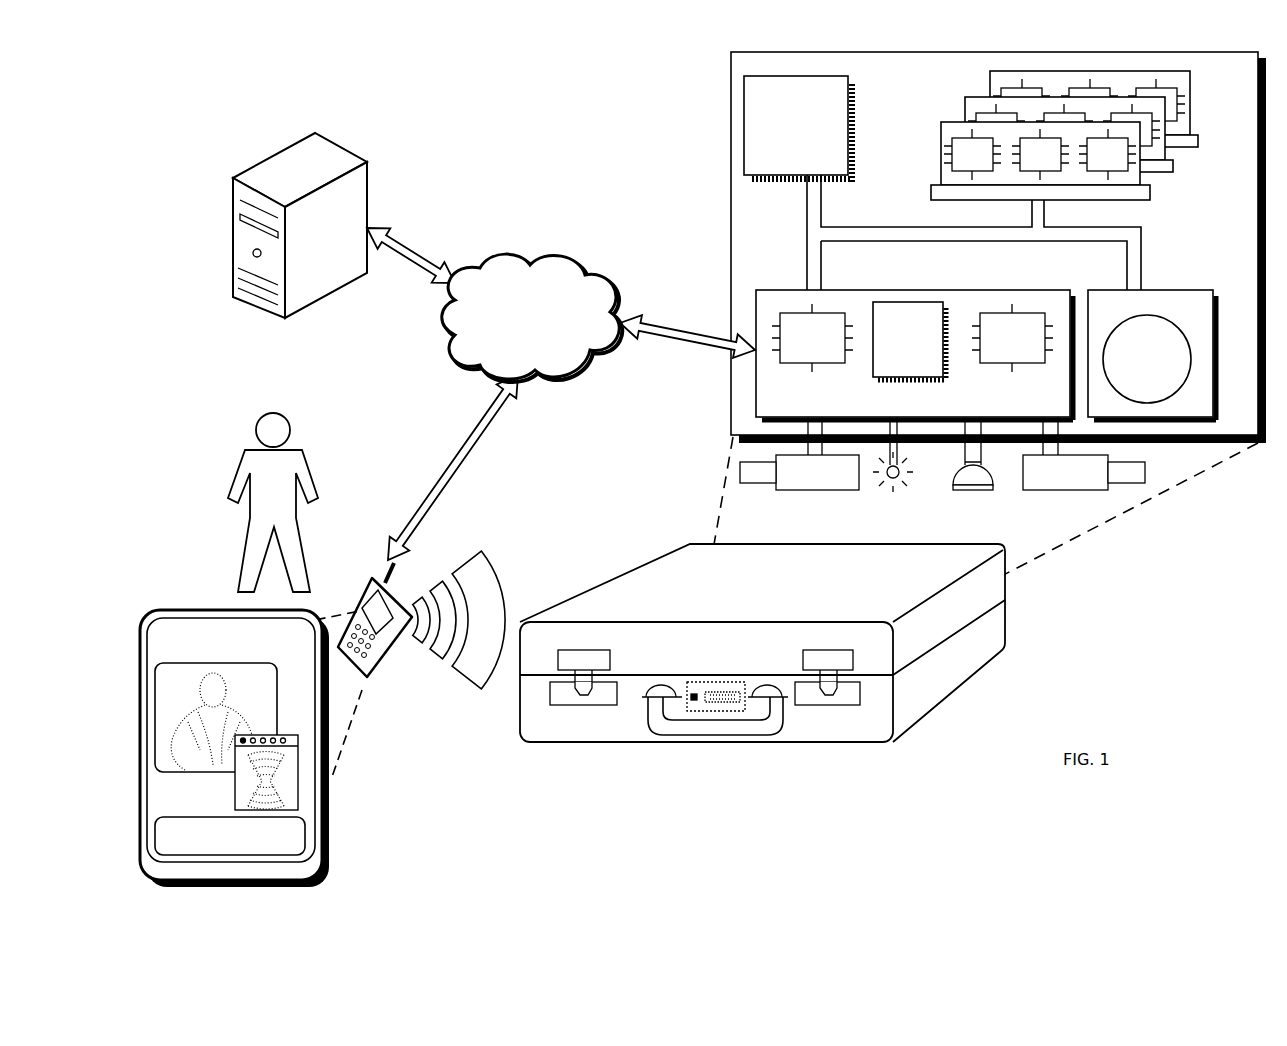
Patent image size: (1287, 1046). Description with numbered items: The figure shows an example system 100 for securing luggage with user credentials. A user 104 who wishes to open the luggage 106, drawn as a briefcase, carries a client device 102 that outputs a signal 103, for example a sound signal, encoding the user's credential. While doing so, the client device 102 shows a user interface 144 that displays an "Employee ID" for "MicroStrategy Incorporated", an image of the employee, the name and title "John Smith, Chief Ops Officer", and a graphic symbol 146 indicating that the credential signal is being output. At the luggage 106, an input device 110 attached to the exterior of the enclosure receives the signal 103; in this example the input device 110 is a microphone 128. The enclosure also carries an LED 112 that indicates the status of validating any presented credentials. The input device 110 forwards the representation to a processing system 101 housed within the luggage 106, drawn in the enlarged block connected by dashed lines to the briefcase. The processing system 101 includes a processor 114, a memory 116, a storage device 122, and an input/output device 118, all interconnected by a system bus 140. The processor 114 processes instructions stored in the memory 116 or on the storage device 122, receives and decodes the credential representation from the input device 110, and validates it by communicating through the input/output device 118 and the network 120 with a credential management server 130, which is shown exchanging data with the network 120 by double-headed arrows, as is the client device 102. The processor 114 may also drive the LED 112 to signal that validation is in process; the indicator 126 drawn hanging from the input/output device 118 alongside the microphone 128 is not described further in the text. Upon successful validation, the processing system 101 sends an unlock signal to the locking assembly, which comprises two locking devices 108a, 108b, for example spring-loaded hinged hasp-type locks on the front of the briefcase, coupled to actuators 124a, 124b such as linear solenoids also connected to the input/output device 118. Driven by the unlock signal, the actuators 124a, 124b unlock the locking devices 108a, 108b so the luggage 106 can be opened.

The system 100 is at (530, 120).
The processing system 101 is at (731, 128).
The client device 102 is at (365, 585).
The signal 103 is at (497, 563).
The user 104 is at (315, 485).
The luggage 106 is at (690, 545).
The locking device 108a is at (587, 705).
The locking device 108b is at (835, 705).
The input device 110 is at (725, 712).
The LED 112 is at (693, 702).
The processor 114 is at (798, 129).
The memory 116 is at (1198, 168).
The input/output device 118 is at (914, 355).
The network 120 is at (532, 318).
The storage device 122 is at (1152, 355).
The actuator 124a is at (817, 490).
The actuator 124b is at (1077, 490).
The LED indicator 126 is at (897, 485).
The microphone 128 is at (976, 490).
The credential management server 130 is at (370, 172).
The system bus 140 is at (933, 247).
The user interface 144 is at (212, 612).
The graphic symbol 146 is at (298, 788).